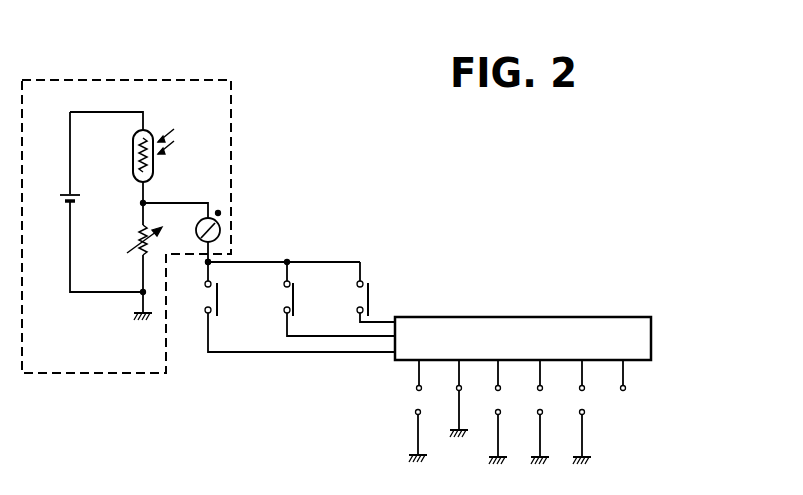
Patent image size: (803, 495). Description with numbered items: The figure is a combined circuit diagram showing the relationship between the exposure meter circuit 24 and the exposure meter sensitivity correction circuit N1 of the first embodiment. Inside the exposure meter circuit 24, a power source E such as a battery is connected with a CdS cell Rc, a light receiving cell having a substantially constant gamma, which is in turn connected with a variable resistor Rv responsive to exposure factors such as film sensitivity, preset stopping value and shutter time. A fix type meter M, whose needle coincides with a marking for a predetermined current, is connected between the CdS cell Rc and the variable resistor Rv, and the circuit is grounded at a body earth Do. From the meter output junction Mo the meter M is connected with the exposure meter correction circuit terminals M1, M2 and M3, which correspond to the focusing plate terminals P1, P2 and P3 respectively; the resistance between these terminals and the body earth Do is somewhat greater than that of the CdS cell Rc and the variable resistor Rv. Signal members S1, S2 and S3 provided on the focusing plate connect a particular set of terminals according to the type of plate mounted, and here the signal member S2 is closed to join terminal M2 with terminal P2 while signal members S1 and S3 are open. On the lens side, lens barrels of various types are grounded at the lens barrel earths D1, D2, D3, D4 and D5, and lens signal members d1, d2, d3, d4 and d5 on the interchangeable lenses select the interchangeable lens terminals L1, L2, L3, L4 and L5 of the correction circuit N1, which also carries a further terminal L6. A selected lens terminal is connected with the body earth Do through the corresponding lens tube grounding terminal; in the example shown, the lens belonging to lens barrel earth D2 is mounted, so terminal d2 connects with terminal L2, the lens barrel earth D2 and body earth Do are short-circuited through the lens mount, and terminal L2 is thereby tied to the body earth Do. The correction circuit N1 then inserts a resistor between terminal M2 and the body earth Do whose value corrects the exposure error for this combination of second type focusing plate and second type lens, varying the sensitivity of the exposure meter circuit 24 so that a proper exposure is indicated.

The exposure meter circuit 24 is at (233, 101).
The CdS cell Rc is at (155, 165).
The power source E is at (80, 201).
The variable resistor Rv is at (131, 246).
The body earth Do is at (140, 314).
The meter M is at (220, 232).
The meter output junction Mo is at (211, 262).
The exposure meter correction circuit terminal M1 is at (204, 284).
The focusing plate terminal P1 is at (204, 310).
The signal member S1 is at (219, 298).
The exposure meter correction circuit terminal M2 is at (284, 284).
The focusing plate terminal P2 is at (284, 312).
The signal member S2 is at (295, 298).
The exposure meter correction circuit terminal M3 is at (357, 284).
The focusing plate terminal P3 is at (357, 312).
The signal member S3 is at (370, 298).
The exposure meter sensitivity correction circuit N1 is at (483, 317).
The interchangeable lens terminal L1 is at (431, 385).
The interchangeable lens terminal L2 is at (471, 385).
The interchangeable lens terminal L3 is at (510, 385).
The interchangeable lens terminal L4 is at (552, 385).
The interchangeable lens terminal L5 is at (594, 385).
The interchangeable lens terminal L6 is at (635, 385).
The lens signal member d1 is at (415, 412).
The lens signal member d2 is at (457, 389).
The lens signal member d3 is at (495, 412).
The lens signal member d4 is at (537, 412).
The lens signal member d5 is at (579, 412).
The lens barrel earth D1 is at (412, 454).
The lens barrel earth D2 is at (450, 430).
The lens barrel earth D3 is at (501, 457).
The lens barrel earth D4 is at (553, 452).
The lens barrel earth D5 is at (595, 452).